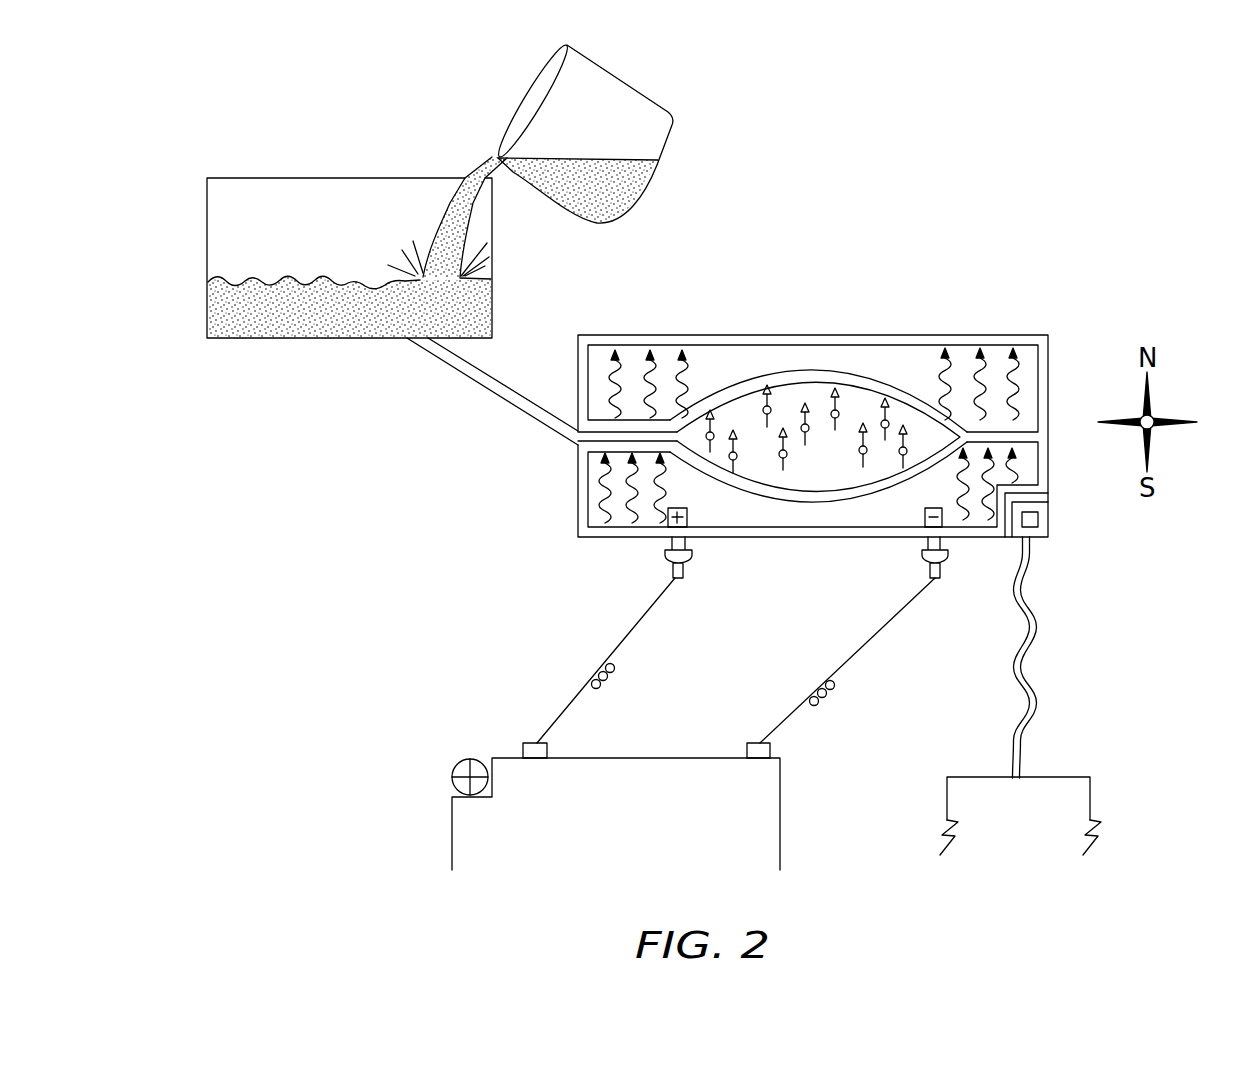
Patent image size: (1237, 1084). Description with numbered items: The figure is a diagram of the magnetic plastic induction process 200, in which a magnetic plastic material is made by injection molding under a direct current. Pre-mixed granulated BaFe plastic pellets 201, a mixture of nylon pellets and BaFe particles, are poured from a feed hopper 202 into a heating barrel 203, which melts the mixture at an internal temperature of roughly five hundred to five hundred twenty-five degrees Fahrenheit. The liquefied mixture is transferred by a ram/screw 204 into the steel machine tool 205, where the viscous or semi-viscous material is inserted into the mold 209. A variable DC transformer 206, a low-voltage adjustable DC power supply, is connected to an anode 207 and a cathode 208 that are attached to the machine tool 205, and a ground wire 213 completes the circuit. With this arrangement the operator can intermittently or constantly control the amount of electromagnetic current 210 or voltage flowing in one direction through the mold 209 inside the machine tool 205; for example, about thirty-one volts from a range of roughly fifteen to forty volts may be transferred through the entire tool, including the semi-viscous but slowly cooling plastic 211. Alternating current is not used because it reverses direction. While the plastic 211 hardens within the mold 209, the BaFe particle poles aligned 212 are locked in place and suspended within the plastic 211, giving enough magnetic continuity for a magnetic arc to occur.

The magnetic plastic induction process 200 is at (1031, 196).
The pre-mixed granulated BaFe plastic pellets 201 is at (660, 172).
The feed hopper 202 is at (517, 107).
The heating barrel 203 is at (282, 222).
The ram/screw 204 is at (545, 435).
The steel machine tool 205 is at (577, 507).
The variable DC transformer 206 is at (643, 830).
The anode 207 is at (590, 673).
The cathode 208 is at (808, 690).
The mold 209 is at (895, 508).
The electromagnetic current 210 is at (652, 497).
The plastic 211 is at (737, 400).
The BaFe particle poles aligned 212 is at (891, 379).
The ground wire 213 is at (1055, 830).